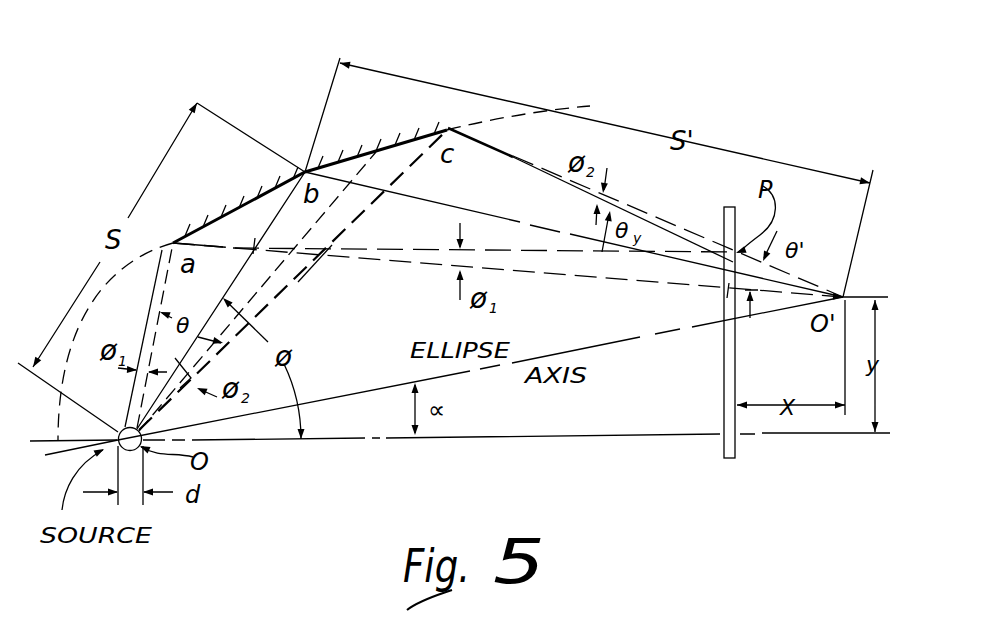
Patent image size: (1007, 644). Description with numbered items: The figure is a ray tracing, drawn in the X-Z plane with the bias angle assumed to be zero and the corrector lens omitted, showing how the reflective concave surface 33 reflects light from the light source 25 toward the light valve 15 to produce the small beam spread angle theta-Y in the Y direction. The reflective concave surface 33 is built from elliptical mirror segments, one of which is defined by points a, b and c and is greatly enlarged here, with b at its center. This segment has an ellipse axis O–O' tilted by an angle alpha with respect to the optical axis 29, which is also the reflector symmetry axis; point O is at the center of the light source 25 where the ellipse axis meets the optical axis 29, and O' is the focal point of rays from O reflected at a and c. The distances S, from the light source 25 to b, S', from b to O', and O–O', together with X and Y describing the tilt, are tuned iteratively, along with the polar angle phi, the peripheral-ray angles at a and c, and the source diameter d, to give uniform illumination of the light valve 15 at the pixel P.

The light valve 15 is at (726, 210).
The light source 25 is at (122, 428).
The optical axis 29 is at (645, 432).
The reflective concave surface 33 is at (214, 224).